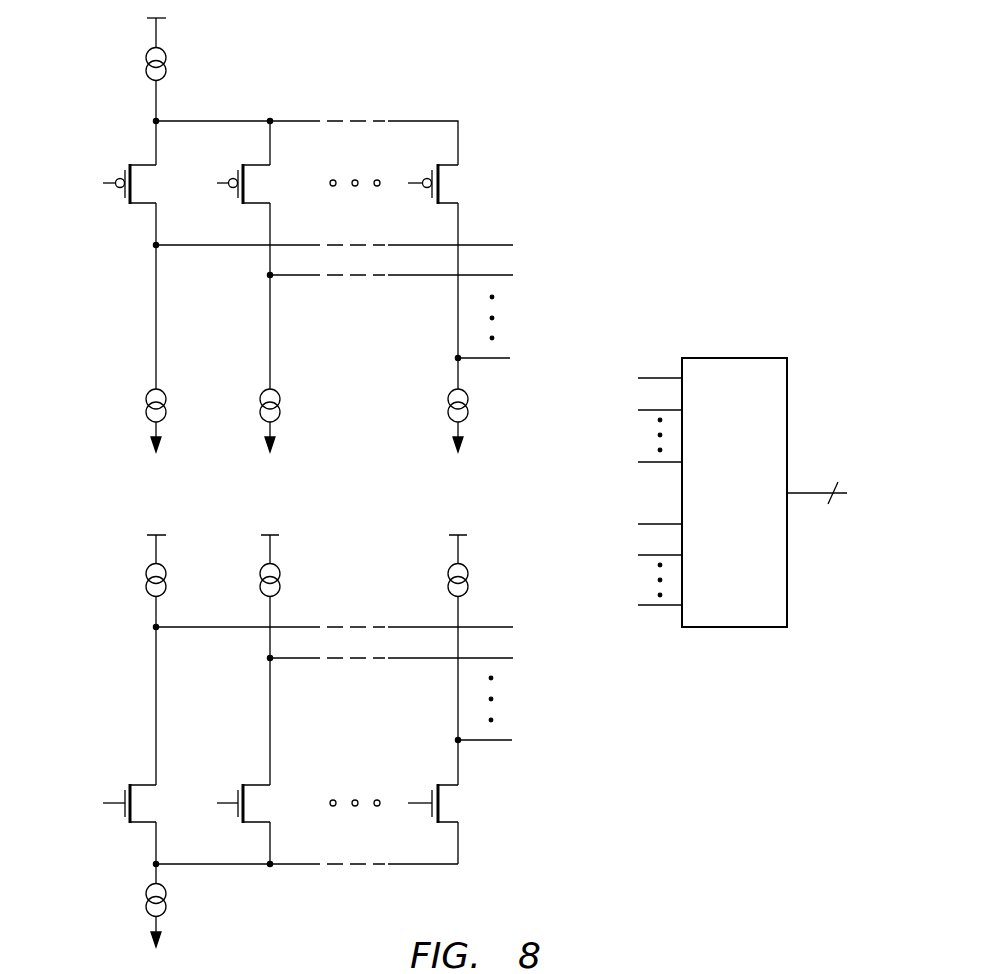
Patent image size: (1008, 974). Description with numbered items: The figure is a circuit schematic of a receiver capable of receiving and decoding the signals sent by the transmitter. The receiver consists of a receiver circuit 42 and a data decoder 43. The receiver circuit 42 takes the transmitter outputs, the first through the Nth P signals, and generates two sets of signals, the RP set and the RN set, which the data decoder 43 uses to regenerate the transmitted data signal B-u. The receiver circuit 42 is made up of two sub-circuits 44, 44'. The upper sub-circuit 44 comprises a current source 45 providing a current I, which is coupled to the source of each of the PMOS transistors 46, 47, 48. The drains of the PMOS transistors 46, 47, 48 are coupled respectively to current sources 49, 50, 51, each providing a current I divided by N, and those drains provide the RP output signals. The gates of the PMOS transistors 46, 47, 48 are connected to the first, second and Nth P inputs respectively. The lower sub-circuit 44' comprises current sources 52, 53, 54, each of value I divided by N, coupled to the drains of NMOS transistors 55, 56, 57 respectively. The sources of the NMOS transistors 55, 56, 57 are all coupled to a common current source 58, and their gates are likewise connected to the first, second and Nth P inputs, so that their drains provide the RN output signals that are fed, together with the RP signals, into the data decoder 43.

The receiver circuit 42 is at (590, 130).
The data decoder 43 is at (734, 358).
The sub-circuit 44 is at (300, 235).
The sub-circuit 44' is at (300, 741).
The current source 45 is at (145, 58).
The PMOS transistor 46 is at (124, 196).
The PMOS transistor 47 is at (238, 196).
The PMOS transistor 48 is at (428, 196).
The current source 49 is at (147, 410).
The current source 50 is at (261, 410).
The current source 51 is at (451, 410).
The current source 52 is at (147, 575).
The current source 53 is at (261, 575).
The current source 54 is at (451, 575).
The NMOS transistor 55 is at (124, 816).
The NMOS transistor 56 is at (238, 816).
The NMOS transistor 57 is at (428, 816).
The current source 58 is at (147, 905).